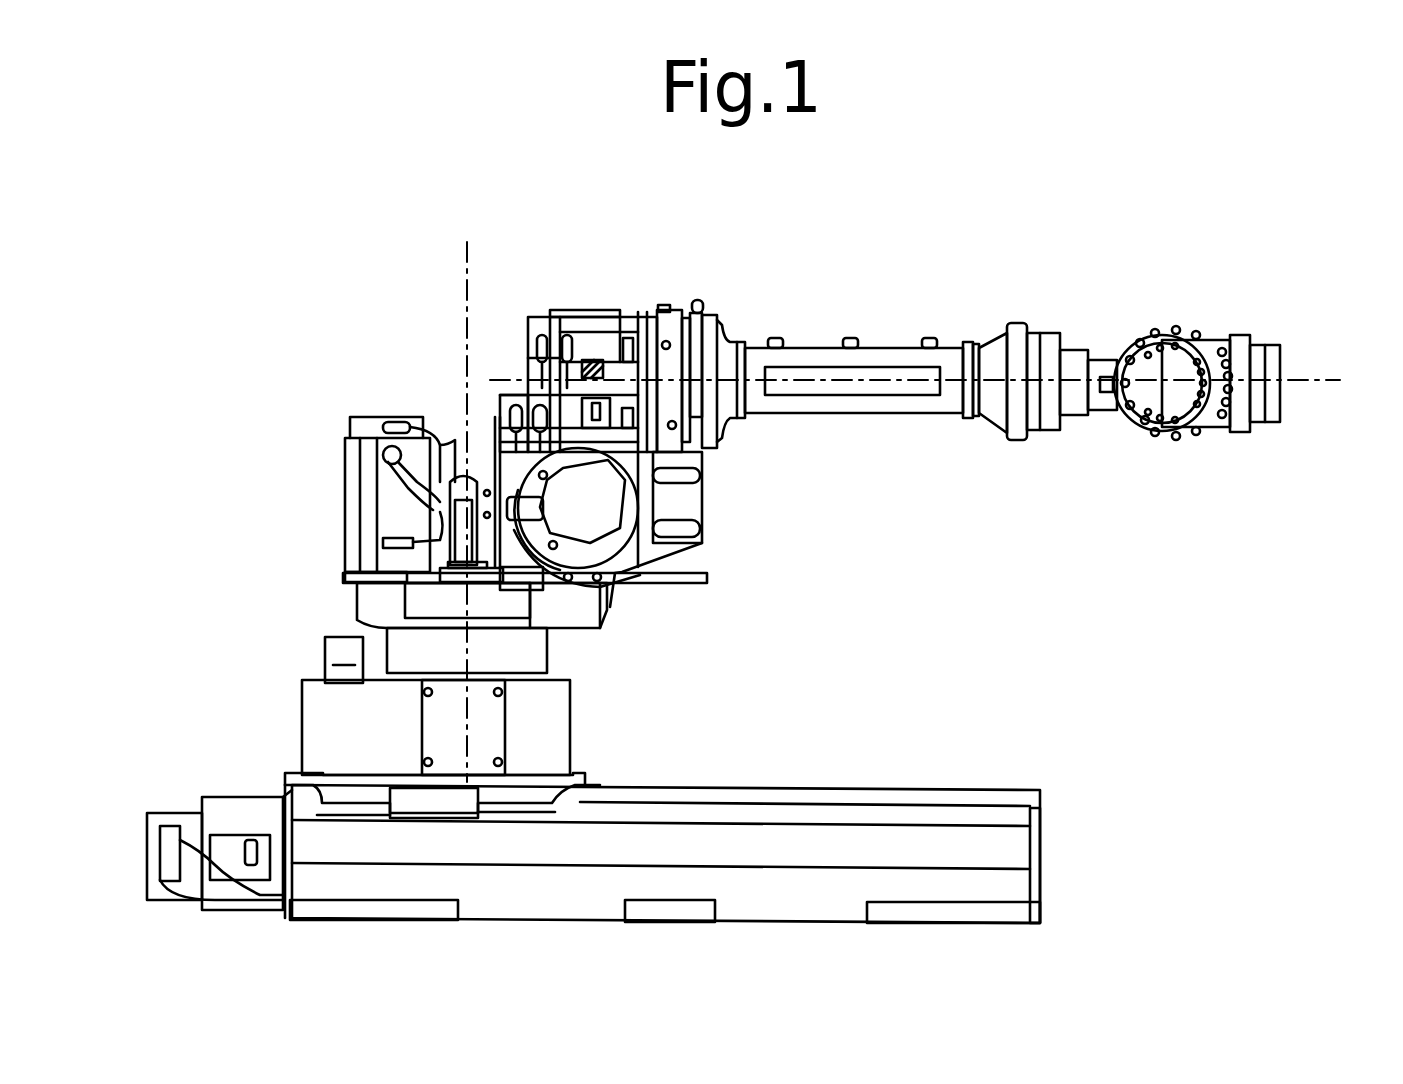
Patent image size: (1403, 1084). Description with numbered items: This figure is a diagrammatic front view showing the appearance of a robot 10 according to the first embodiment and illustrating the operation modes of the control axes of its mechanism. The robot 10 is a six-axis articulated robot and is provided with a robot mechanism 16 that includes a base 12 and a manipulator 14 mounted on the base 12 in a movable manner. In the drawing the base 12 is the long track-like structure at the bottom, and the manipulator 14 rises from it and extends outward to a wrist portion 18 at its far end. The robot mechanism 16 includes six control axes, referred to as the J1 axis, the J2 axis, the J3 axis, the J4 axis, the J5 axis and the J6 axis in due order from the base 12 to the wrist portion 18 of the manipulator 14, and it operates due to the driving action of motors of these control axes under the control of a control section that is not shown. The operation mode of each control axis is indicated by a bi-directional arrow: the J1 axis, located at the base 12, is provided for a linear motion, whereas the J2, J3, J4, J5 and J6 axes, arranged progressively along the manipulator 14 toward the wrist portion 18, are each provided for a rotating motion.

The robot 10 is at (688, 258).
The base 12 is at (1040, 828).
The manipulator 14 is at (345, 548).
The robot mechanism 16 is at (300, 480).
The wrist portion 18 is at (1283, 413).
The J1 axis J1 is at (665, 762).
The J2 axis J2 is at (447, 262).
The J3 axis J3 is at (795, 425).
The J4 axis J4 is at (910, 448).
The J5 axis J5 is at (1243, 467).
The J6 axis J6 is at (1325, 416).